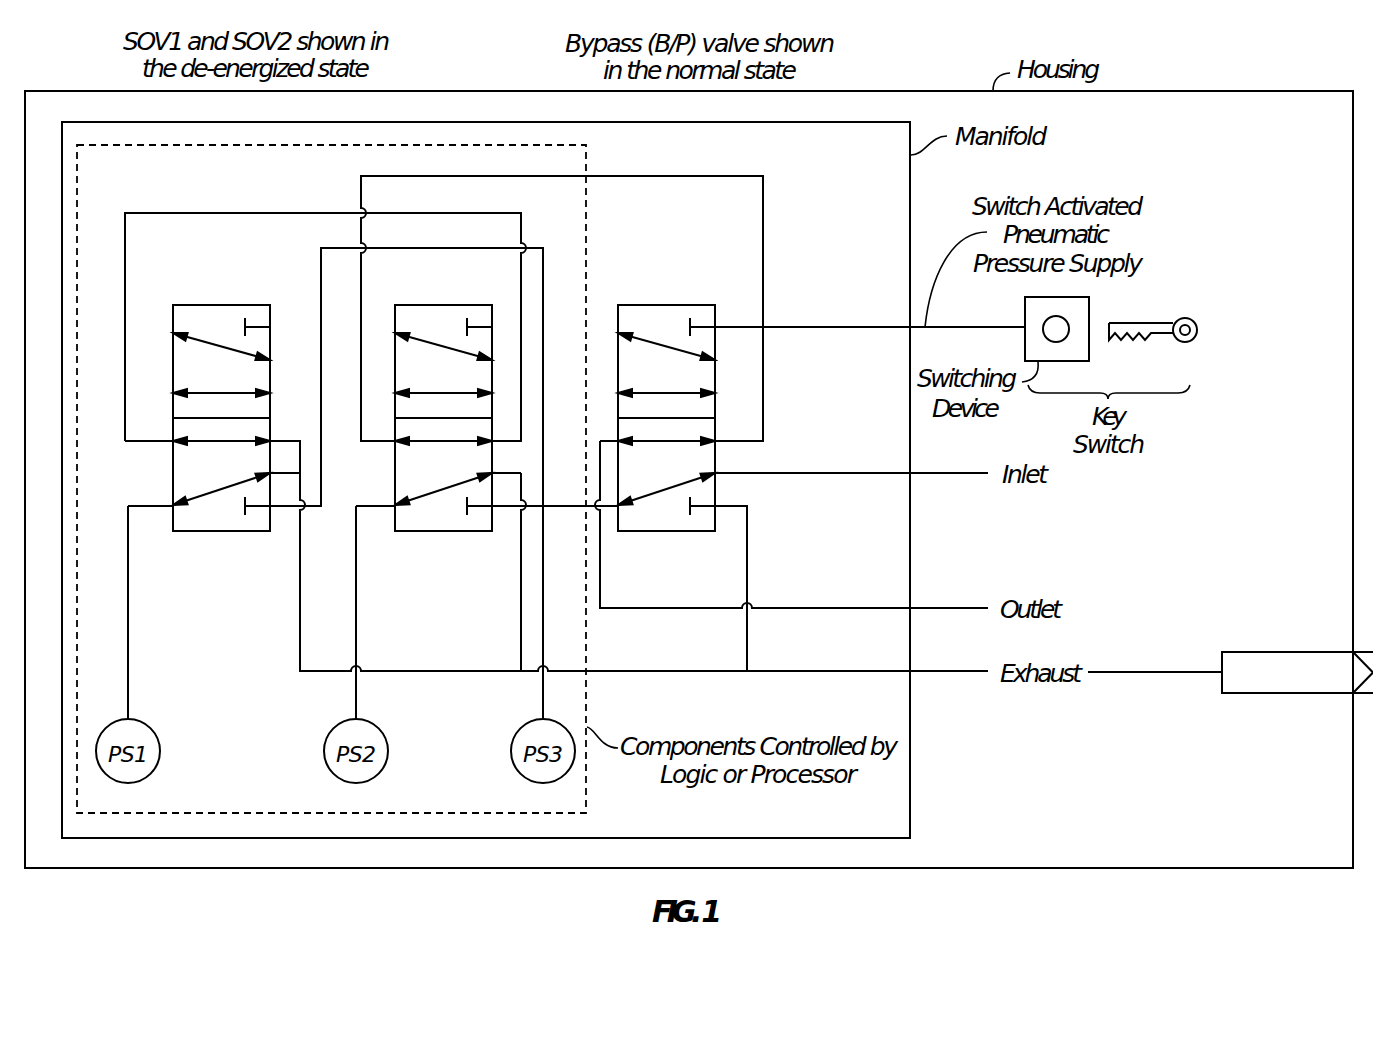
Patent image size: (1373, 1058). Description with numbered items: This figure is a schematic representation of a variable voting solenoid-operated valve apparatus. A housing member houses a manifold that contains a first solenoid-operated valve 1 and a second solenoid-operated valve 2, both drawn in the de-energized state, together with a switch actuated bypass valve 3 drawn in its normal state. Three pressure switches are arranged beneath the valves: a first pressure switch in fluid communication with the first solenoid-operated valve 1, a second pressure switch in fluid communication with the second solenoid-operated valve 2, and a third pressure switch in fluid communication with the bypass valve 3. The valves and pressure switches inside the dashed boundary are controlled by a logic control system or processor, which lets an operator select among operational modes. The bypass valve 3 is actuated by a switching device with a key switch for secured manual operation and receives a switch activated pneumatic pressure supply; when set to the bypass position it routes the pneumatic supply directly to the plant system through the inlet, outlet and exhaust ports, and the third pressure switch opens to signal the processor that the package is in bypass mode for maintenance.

The first solenoid-operated valve 1 is at (198, 305).
The second solenoid-operated valve 2 is at (418, 305).
The switch actuated bypass valve 3 is at (645, 305).